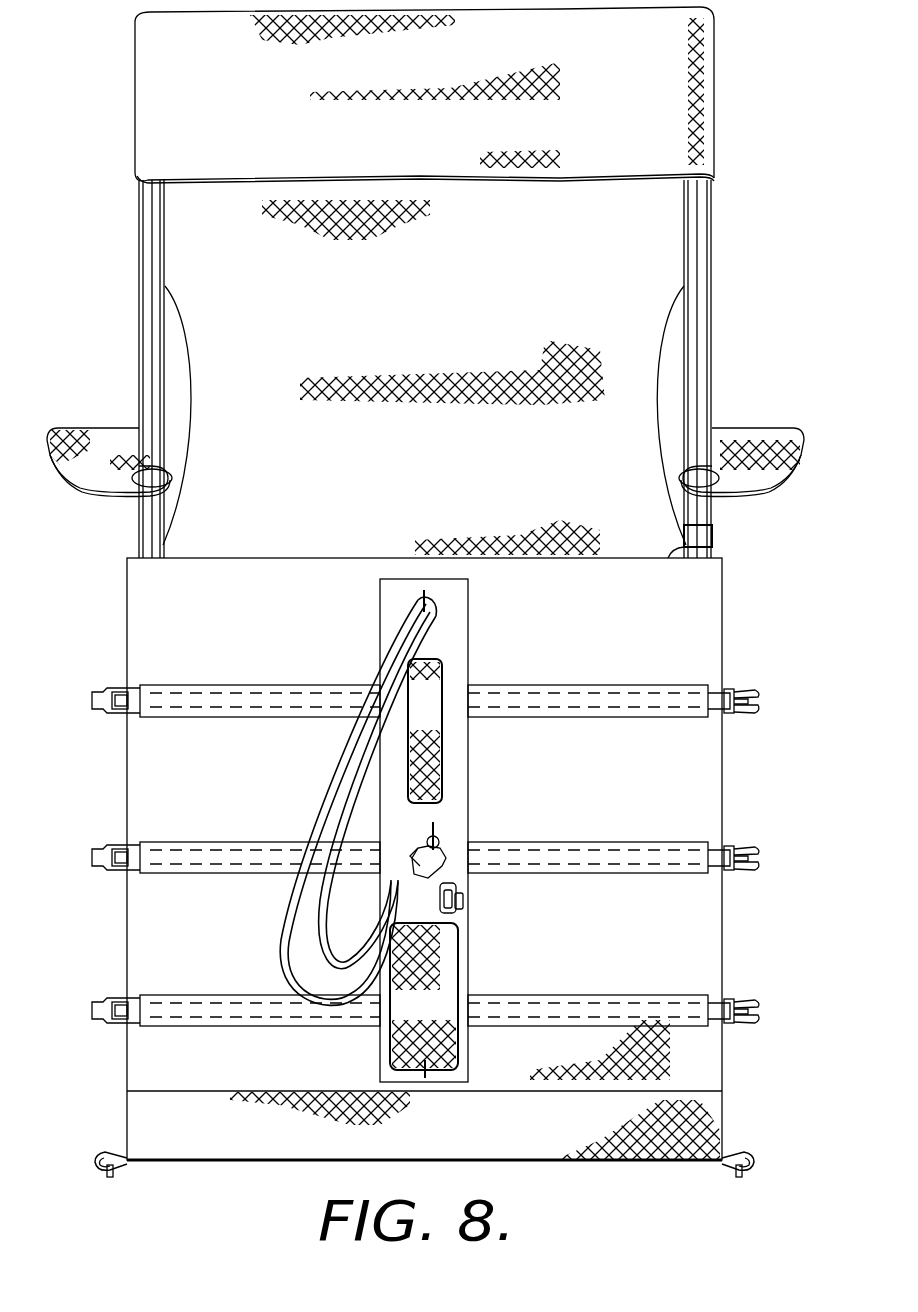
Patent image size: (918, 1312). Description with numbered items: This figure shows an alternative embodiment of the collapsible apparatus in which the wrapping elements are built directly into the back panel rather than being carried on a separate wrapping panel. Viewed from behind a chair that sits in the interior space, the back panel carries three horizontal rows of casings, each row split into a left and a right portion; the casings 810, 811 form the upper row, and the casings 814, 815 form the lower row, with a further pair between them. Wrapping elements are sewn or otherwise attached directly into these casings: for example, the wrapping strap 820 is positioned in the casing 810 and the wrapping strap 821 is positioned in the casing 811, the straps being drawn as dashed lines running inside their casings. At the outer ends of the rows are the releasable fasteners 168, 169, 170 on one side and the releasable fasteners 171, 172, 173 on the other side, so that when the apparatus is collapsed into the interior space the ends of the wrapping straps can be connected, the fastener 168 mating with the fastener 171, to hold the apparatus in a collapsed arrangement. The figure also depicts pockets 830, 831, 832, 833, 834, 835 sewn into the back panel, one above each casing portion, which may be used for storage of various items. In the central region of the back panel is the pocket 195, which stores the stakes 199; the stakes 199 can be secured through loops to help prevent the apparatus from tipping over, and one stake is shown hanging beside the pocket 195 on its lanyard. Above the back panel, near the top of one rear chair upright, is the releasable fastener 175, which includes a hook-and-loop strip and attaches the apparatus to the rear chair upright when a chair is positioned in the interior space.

The releasable fastener 168 is at (94, 689).
The releasable fastener 169 is at (94, 846).
The releasable fastener 170 is at (94, 999).
The releasable fastener 171 is at (748, 690).
The releasable fastener 172 is at (748, 847).
The releasable fastener 173 is at (748, 1000).
The releasable fastener 175 is at (712, 538).
The pocket 195 is at (458, 968).
The stakes 199 is at (448, 870).
The casing 810 is at (268, 708).
The casing 811 is at (555, 708).
The casing 814 is at (250, 1020).
The casing 815 is at (566, 1020).
The wrapping strap 820 is at (183, 690).
The wrapping strap 821 is at (658, 690).
The pocket 830 is at (252, 682).
The pocket 831 is at (547, 682).
The pocket 832 is at (207, 840).
The pocket 833 is at (501, 840).
The pocket 834 is at (200, 992).
The pocket 835 is at (595, 992).